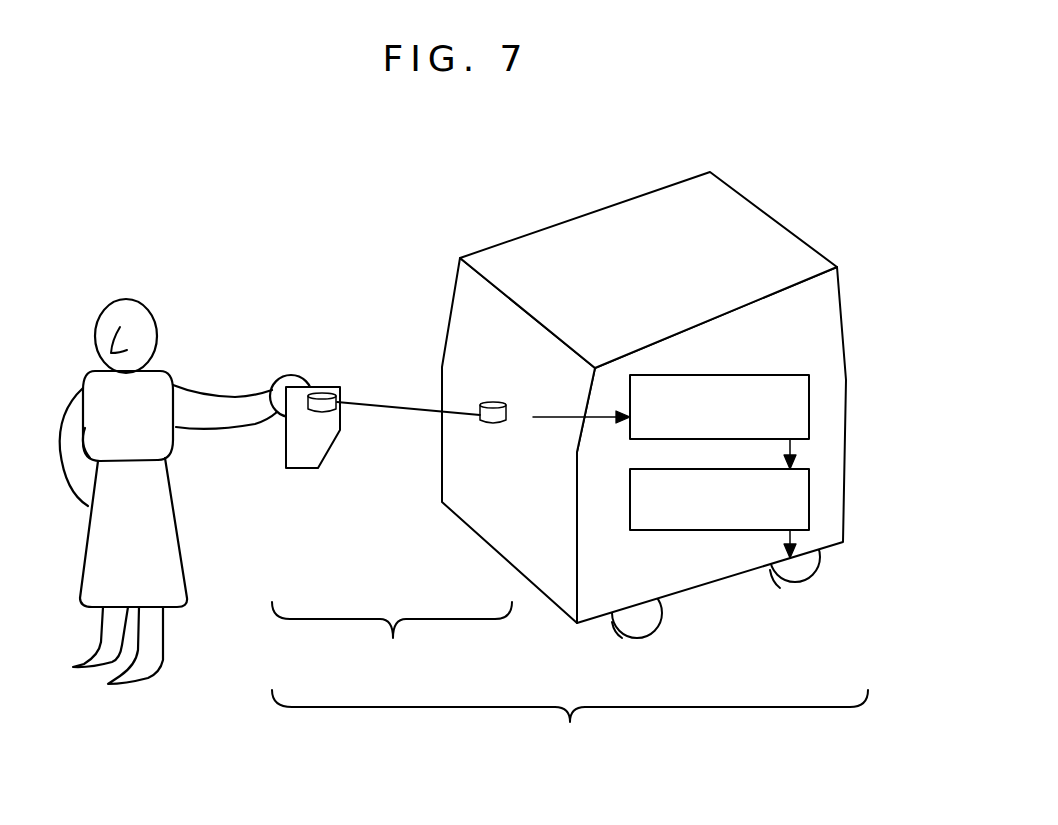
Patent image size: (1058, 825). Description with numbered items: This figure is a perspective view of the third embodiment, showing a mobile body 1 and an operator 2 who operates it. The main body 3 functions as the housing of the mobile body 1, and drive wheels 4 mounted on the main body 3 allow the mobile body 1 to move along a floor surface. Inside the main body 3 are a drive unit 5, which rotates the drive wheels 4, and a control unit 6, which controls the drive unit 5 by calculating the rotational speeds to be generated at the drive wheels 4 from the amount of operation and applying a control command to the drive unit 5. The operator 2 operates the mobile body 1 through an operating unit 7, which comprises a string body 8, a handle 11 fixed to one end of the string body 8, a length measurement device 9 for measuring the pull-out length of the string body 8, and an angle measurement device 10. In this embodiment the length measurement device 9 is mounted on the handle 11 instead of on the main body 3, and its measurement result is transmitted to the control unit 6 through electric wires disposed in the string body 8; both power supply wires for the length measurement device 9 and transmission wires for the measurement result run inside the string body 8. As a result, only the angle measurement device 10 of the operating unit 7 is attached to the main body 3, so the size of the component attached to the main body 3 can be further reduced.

The mobile body 1 is at (570, 725).
The operator 2 is at (108, 298).
The main body 3 is at (565, 250).
The drive wheels 4 is at (803, 572).
The drive unit 5 is at (719, 499).
The control unit 6 is at (719, 407).
The operating unit 7 is at (392, 638).
The string body 8 is at (386, 400).
The length measurement device 9 is at (310, 397).
The angle measurement device 10 is at (487, 424).
The handle 11 is at (302, 440).